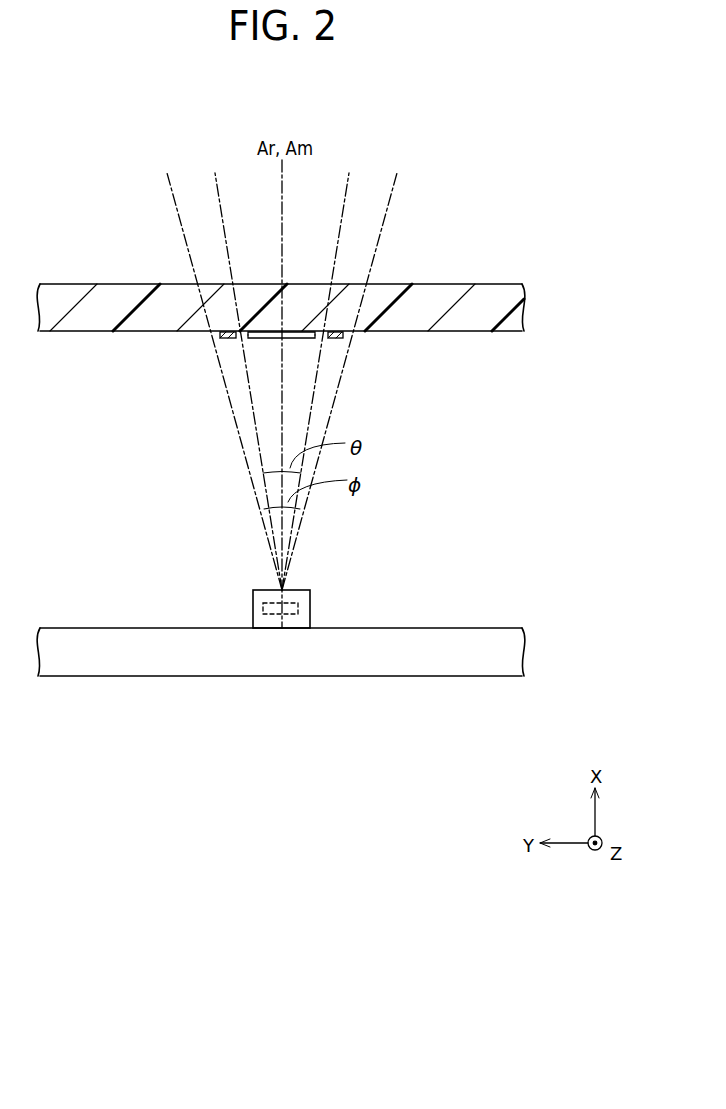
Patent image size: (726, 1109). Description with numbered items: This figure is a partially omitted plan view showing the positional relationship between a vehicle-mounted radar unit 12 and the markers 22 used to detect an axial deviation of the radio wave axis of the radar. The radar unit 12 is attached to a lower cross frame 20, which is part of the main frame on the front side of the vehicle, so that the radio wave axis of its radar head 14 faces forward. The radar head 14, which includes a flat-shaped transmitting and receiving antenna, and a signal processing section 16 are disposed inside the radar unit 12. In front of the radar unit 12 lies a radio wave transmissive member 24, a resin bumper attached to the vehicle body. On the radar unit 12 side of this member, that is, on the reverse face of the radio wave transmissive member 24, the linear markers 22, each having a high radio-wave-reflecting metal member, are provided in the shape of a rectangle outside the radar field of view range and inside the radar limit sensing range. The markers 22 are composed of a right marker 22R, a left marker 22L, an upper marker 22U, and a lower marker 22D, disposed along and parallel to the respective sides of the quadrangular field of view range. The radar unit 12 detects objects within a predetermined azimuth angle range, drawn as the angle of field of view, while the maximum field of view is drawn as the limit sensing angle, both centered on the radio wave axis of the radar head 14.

The radar unit 12 is at (285, 584).
The radar head 14 is at (262, 588).
The signal processing section 16 is at (263, 608).
The lower cross frame 20 is at (439, 628).
The markers 22 is at (302, 333).
The left marker 22L is at (227, 342).
The right marker 22R is at (333, 340).
The upper marker 22U is at (267, 331).
The lower marker 22D is at (281, 336).
The radio wave transmissive member 24 is at (438, 283).